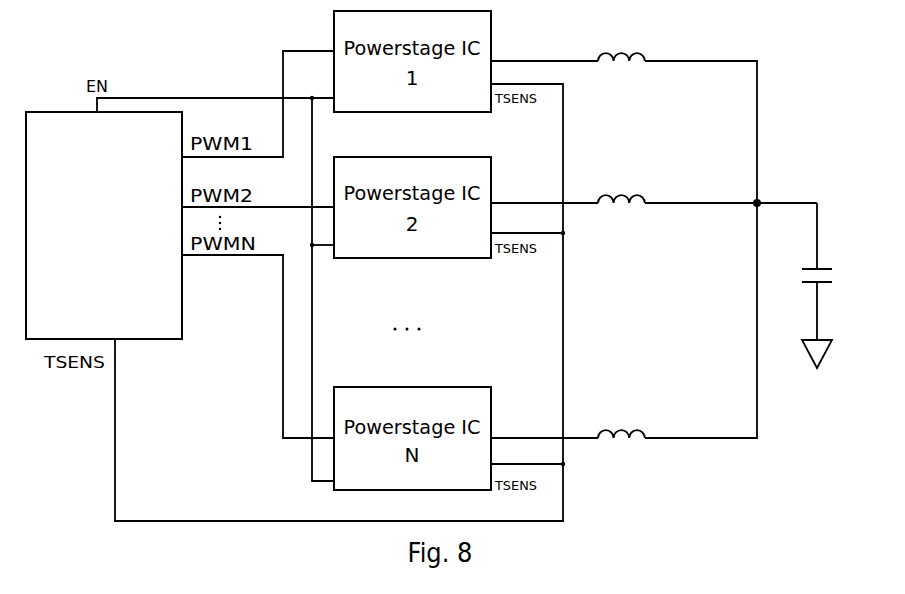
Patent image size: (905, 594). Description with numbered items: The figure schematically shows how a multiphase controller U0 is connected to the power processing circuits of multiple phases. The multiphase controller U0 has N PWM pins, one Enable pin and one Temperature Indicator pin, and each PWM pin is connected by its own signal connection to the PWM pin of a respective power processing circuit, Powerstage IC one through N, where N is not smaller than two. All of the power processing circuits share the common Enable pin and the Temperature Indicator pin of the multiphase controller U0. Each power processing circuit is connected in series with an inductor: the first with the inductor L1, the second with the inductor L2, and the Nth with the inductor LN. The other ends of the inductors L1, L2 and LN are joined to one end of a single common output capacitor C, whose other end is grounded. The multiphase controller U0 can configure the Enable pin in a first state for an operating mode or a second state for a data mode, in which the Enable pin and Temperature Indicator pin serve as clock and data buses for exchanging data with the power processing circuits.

The multiphase controller U0 is at (104, 225).
The inductor L1 is at (621, 46).
The inductor L2 is at (621, 186).
The inductor LN is at (621, 424).
The output capacitor C is at (831, 285).